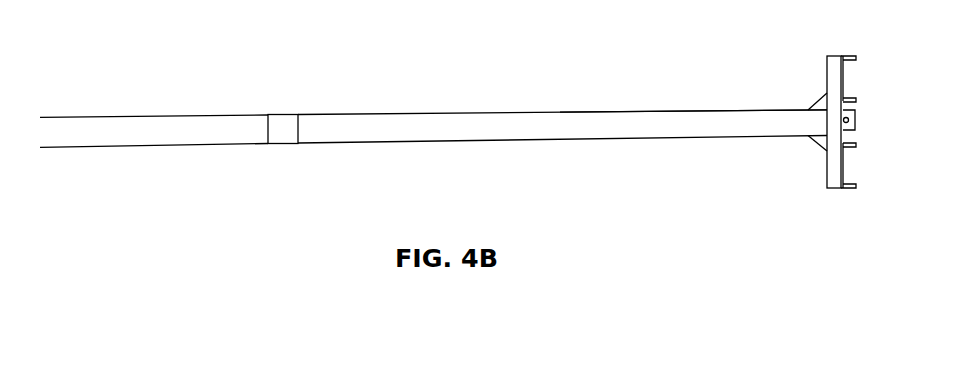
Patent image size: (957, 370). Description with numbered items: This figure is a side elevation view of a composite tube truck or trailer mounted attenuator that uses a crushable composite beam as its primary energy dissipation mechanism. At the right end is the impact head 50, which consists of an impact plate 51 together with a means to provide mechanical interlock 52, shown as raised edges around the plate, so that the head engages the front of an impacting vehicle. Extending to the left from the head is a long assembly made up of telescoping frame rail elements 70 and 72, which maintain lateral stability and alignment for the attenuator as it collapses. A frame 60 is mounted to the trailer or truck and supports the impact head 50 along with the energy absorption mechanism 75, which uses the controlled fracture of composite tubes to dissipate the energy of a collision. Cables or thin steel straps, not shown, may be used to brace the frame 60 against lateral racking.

The impact head 50 is at (828, 103).
The impact plate 51 is at (800, 131).
The means to provide mechanical interlock 52 is at (868, 122).
The frame 60 is at (258, 99).
The telescoping frame rail element 70 is at (562, 98).
The telescoping frame rail element 72 is at (154, 157).
The energy absorption mechanism 75 is at (693, 81).